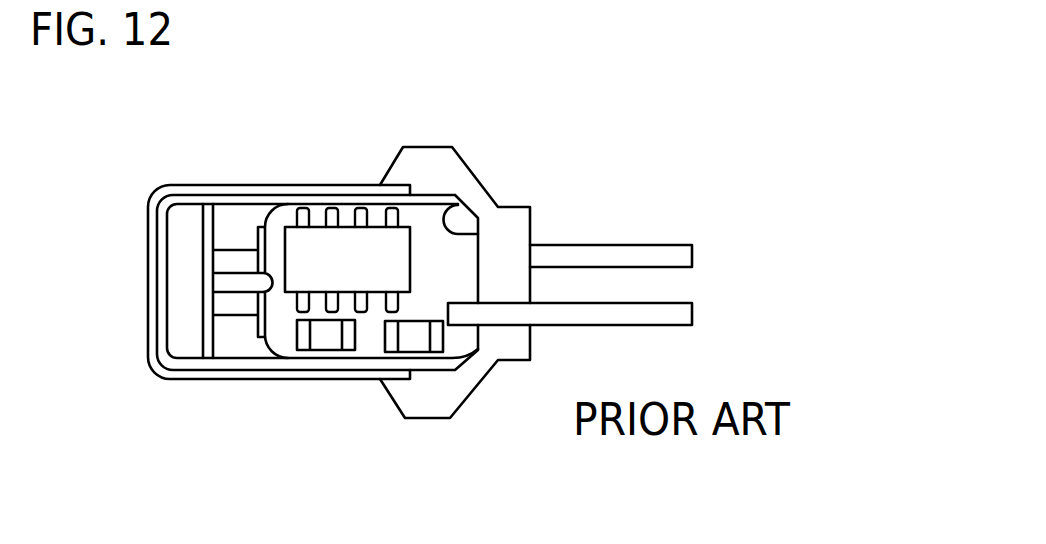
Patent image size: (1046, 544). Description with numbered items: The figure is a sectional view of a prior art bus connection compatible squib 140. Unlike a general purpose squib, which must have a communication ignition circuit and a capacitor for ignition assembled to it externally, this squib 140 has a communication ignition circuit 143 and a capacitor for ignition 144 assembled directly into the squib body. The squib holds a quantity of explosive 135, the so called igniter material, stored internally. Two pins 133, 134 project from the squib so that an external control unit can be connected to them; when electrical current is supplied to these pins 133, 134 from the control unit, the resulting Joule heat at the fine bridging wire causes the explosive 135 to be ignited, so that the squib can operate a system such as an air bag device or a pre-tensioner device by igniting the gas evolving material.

The pin 133 is at (690, 254).
The pin 134 is at (690, 312).
The explosive 135 is at (175, 279).
The squib 140 is at (606, 168).
The communication ignition circuit 143 is at (363, 213).
The capacitor for ignition 144 is at (325, 343).